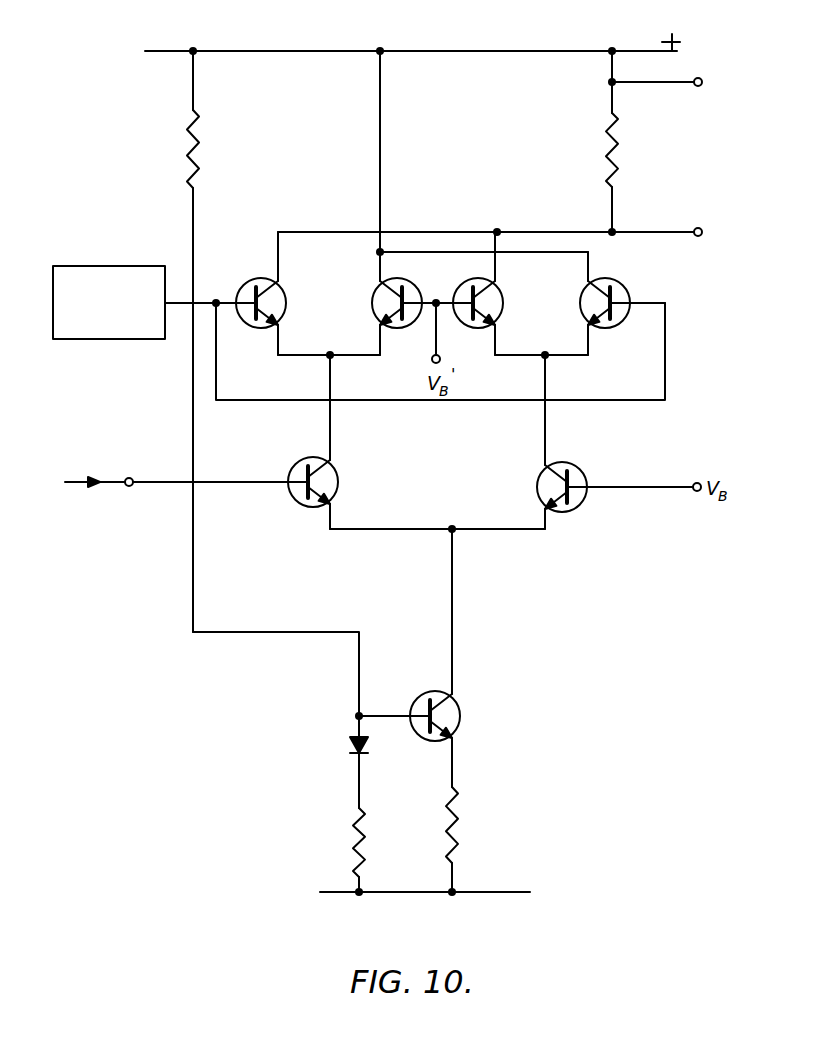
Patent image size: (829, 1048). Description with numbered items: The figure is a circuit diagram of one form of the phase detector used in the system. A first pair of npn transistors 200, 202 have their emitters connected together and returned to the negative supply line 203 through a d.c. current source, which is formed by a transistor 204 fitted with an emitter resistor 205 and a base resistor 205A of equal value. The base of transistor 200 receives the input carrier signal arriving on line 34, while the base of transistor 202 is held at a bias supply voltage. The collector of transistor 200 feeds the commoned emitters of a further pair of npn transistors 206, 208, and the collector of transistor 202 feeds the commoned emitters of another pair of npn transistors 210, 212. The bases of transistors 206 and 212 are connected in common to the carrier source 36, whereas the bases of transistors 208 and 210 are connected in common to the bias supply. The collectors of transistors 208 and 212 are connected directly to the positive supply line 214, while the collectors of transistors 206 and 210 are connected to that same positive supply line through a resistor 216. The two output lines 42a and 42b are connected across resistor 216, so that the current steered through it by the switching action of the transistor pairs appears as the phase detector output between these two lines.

The positive supply line 214 is at (464, 50).
The line 42a is at (694, 80).
The resistor 216 is at (606, 153).
The line 42b is at (667, 230).
The npn transistor 206 is at (251, 291).
The npn transistor 208 is at (378, 298).
The npn transistor 210 is at (498, 303).
The npn transistor 212 is at (612, 288).
The carrier source 36 is at (92, 340).
The line 34 is at (80, 480).
The npn transistor 200 is at (336, 480).
The npn transistor 202 is at (578, 480).
The transistor 204 is at (458, 716).
The base resistor 205A is at (353, 836).
The emitter resistor 205 is at (459, 826).
The negative supply line 203 is at (483, 892).